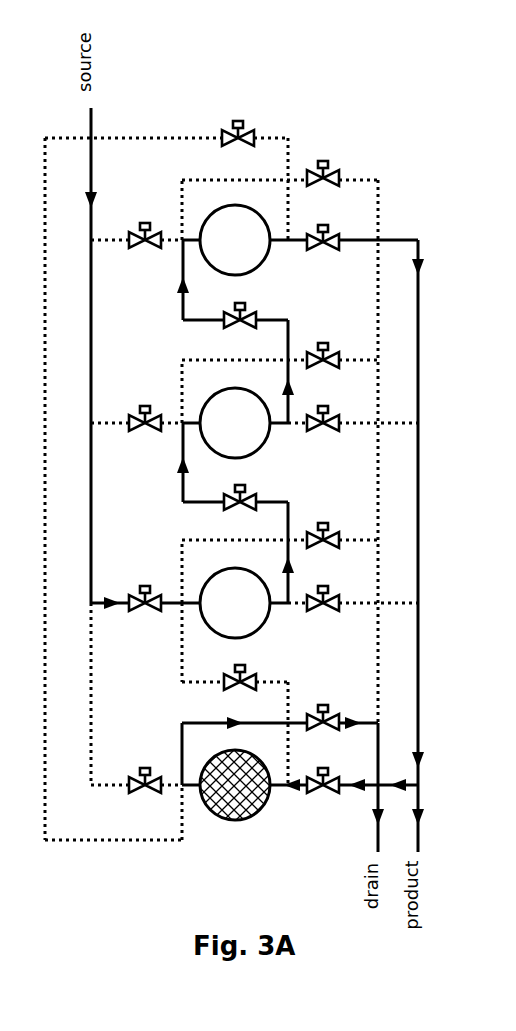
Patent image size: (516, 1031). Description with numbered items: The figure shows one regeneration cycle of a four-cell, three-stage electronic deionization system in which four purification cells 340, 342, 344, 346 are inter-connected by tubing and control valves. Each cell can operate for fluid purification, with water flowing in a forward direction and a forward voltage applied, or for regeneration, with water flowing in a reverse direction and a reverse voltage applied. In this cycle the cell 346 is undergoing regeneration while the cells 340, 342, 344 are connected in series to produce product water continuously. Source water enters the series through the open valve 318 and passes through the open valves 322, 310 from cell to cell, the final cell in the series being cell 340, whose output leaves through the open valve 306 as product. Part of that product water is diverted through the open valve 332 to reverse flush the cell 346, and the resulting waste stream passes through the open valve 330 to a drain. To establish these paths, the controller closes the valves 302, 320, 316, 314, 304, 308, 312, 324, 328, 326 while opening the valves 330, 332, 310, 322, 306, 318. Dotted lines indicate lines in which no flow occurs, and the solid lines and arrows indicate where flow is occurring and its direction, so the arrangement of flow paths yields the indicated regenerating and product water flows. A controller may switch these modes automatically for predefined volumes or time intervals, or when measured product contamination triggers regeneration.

The valve 302 is at (258, 101).
The valve 304 is at (346, 140).
The valve 306 is at (367, 204).
The valve 308 is at (384, 318).
The valve 310 is at (284, 294).
The valve 312 is at (384, 381).
The valve 314 is at (134, 208).
The valve 316 is at (134, 391).
The valve 318 is at (134, 571).
The valve 320 is at (134, 752).
The valve 322 is at (283, 475).
The valve 324 is at (384, 498).
The valve 326 is at (384, 561).
The valve 328 is at (284, 656).
The valve 330 is at (384, 681).
The valve 332 is at (384, 744).
The cell 340 is at (235, 240).
The cell 342 is at (235, 423).
The cell 344 is at (235, 603).
The cell 346 is at (235, 785).